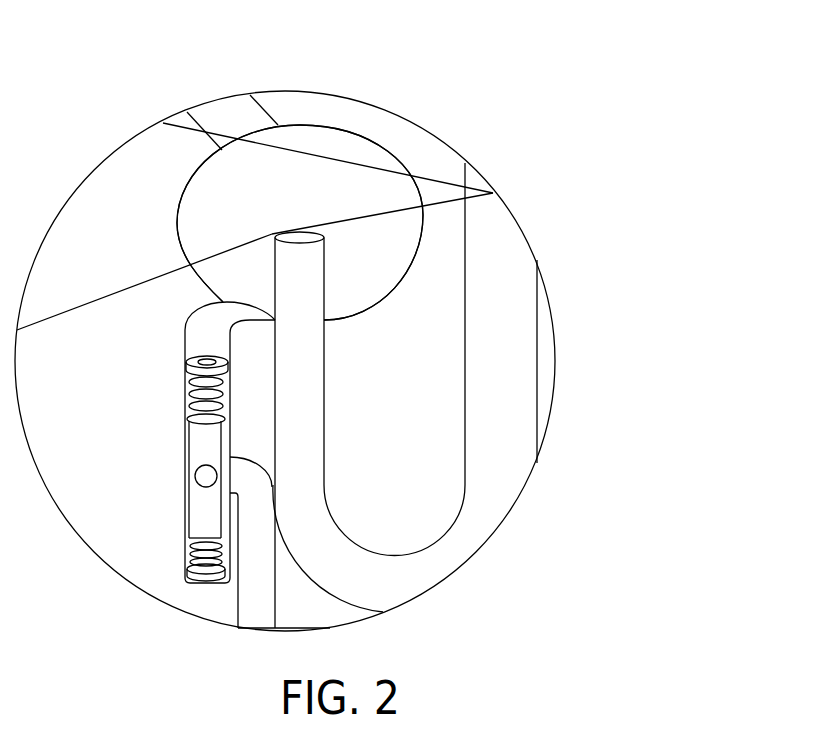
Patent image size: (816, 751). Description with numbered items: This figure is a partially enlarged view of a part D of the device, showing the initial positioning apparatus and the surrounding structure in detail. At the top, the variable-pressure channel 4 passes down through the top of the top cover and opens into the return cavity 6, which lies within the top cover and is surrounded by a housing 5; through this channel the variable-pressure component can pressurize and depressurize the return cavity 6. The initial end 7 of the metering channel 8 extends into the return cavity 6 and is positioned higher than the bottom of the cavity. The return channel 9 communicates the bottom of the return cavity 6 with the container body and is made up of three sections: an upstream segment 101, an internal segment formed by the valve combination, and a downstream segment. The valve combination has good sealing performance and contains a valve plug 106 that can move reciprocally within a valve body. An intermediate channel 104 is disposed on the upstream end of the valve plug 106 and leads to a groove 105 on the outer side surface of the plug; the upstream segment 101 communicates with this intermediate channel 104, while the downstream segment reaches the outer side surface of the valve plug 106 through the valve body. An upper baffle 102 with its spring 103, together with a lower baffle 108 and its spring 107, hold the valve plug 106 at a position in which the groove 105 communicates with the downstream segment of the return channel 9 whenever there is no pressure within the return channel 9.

The variable-pressure channel 4 is at (200, 87).
The housing 5 is at (306, 162).
The return cavity 6 is at (248, 200).
The initial end 7 is at (346, 148).
The metering channel 8 is at (369, 395).
The return channel 9 is at (280, 542).
The part D is at (365, 361).
The upstream segment 101 is at (191, 431).
The upper baffle 102 is at (168, 345).
The spring 103 is at (167, 387).
The intermediate channel 104 is at (165, 427).
The groove 105 is at (164, 454).
The valve plug 106 is at (168, 498).
The spring 107 is at (172, 535).
The lower baffle 108 is at (171, 558).